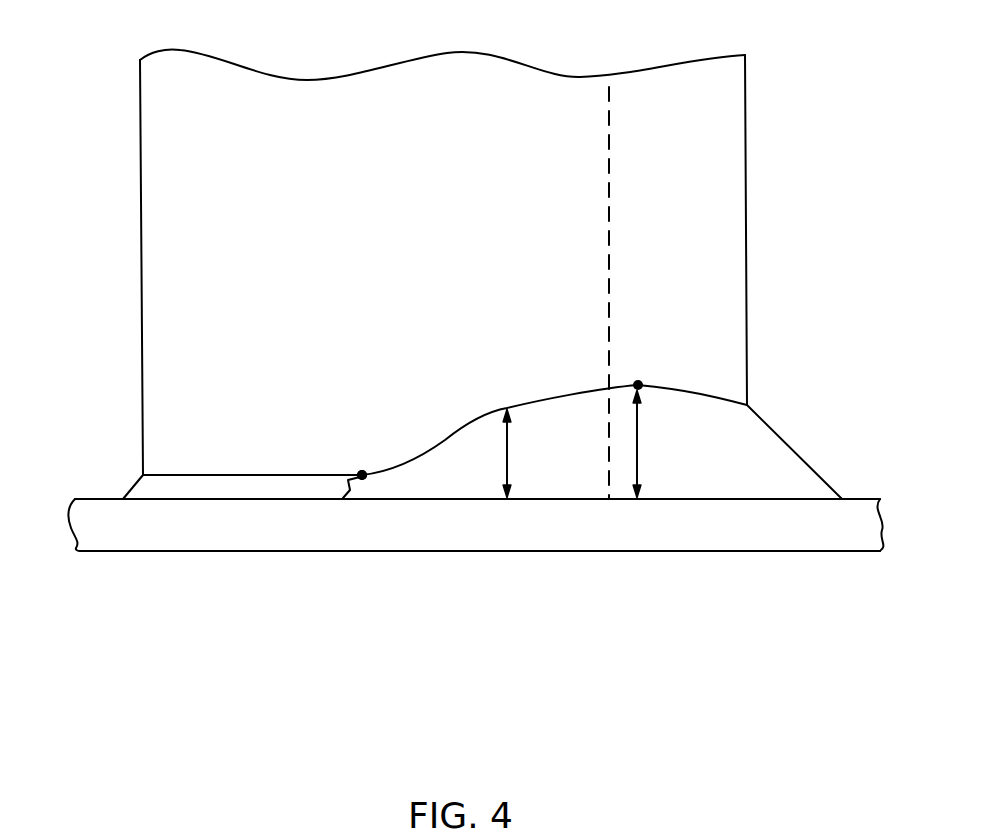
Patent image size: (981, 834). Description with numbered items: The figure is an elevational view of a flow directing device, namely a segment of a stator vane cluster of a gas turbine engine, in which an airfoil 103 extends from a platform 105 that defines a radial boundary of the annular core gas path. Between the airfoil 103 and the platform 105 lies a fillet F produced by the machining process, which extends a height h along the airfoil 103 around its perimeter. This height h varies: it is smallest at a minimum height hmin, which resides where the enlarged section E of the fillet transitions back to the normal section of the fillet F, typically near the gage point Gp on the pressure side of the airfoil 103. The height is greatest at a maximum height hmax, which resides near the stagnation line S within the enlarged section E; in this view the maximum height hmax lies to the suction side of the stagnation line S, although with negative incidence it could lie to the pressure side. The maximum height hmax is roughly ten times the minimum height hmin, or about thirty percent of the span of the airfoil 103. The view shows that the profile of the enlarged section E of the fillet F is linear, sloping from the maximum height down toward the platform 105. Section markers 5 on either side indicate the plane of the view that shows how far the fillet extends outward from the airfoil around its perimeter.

The airfoil 103 is at (497, 80).
The platform 105 is at (797, 538).
The enlarged section E is at (782, 456).
The fillet F is at (212, 487).
The gage point on pressure side Gp is at (362, 475).
The stagnation line S is at (609, 210).
The section line for FIG. 5 is at (130, 341).
The fillet height h is at (503, 453).
The maximum fillet height hmax is at (658, 444).
The minimum fillet height hmin is at (340, 492).